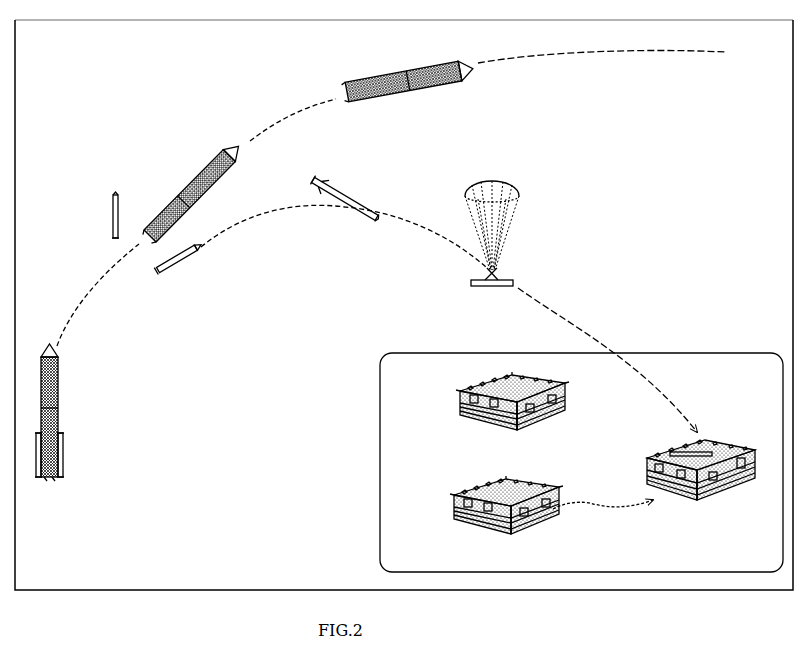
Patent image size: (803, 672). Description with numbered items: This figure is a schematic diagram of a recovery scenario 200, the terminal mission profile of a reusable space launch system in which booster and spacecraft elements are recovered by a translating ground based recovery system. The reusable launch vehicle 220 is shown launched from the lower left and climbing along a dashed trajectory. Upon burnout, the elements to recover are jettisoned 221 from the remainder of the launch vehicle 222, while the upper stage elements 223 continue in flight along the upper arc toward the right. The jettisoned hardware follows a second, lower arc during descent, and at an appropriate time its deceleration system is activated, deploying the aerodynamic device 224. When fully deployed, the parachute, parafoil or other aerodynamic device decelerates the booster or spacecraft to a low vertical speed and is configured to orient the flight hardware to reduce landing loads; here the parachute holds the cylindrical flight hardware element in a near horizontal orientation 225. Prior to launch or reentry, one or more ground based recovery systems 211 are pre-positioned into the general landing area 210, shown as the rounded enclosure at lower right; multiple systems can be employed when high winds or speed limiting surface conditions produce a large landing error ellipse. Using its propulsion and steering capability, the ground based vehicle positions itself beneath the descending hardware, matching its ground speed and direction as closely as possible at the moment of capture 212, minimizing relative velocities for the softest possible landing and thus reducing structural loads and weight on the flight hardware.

The recovery scenario 200 is at (100, 33).
The general landing area 210 is at (376, 492).
The ground based recovery systems 211 is at (484, 480).
The moment of capture 212 is at (736, 437).
The reusable launch vehicle 220 is at (66, 421).
The jettisoned elements to recover 221 is at (190, 267).
The remainder of the launch vehicle 222 is at (211, 142).
The upper stage elements 223 is at (460, 90).
The aerodynamic device 224 is at (349, 225).
The near horizontal orientation 225 is at (512, 273).